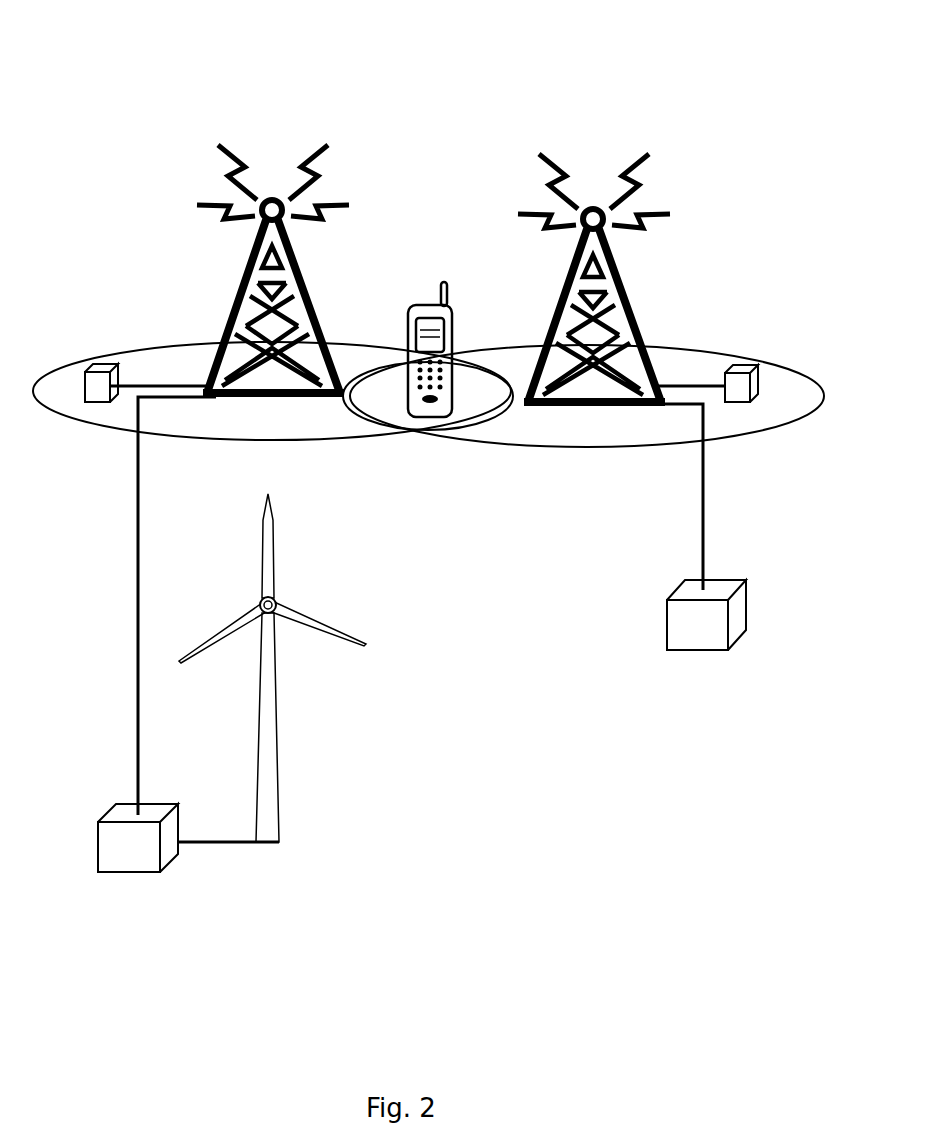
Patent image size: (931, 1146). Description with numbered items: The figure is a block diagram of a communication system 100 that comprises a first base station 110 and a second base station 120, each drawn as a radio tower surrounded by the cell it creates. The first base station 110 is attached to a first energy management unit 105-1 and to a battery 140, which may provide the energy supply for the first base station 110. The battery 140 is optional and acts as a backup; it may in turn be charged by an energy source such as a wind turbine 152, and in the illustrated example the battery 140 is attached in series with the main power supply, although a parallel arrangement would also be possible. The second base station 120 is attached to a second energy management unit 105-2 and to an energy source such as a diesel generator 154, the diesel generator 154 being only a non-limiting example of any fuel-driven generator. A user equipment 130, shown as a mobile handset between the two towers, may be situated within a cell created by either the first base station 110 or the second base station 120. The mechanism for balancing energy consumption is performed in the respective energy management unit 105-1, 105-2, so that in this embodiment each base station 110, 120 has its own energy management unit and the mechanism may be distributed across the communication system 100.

The communication system 100 is at (703, 85).
The first energy management unit 105-1 is at (98, 383).
The second energy management unit 105-2 is at (758, 372).
The first base station 110 is at (297, 268).
The second base station 120 is at (571, 270).
The user equipment 130 is at (453, 398).
The battery 140 is at (170, 853).
The wind turbine 152 is at (277, 599).
The diesel generator 154 is at (692, 635).